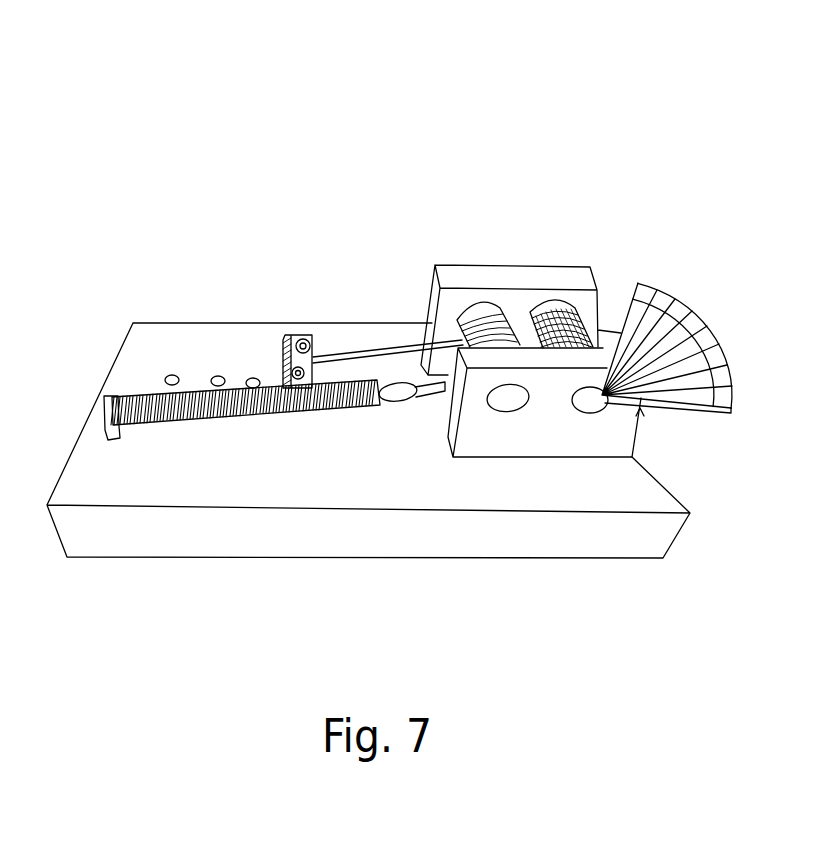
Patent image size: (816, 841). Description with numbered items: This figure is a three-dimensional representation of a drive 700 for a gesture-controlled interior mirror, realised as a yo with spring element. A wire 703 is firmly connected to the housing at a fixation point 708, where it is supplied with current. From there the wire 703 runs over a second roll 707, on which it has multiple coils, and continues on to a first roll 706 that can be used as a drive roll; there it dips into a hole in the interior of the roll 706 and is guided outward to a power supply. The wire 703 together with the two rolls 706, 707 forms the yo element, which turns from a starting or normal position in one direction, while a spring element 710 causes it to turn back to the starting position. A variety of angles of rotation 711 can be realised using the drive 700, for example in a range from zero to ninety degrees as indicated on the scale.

The drive 700 is at (348, 128).
The wire 703 is at (389, 340).
The first roll 706 is at (594, 424).
The second roll 707 is at (509, 414).
The fixation point 708 is at (299, 330).
The spring element 710 is at (214, 432).
The angles of rotation 711 is at (674, 277).